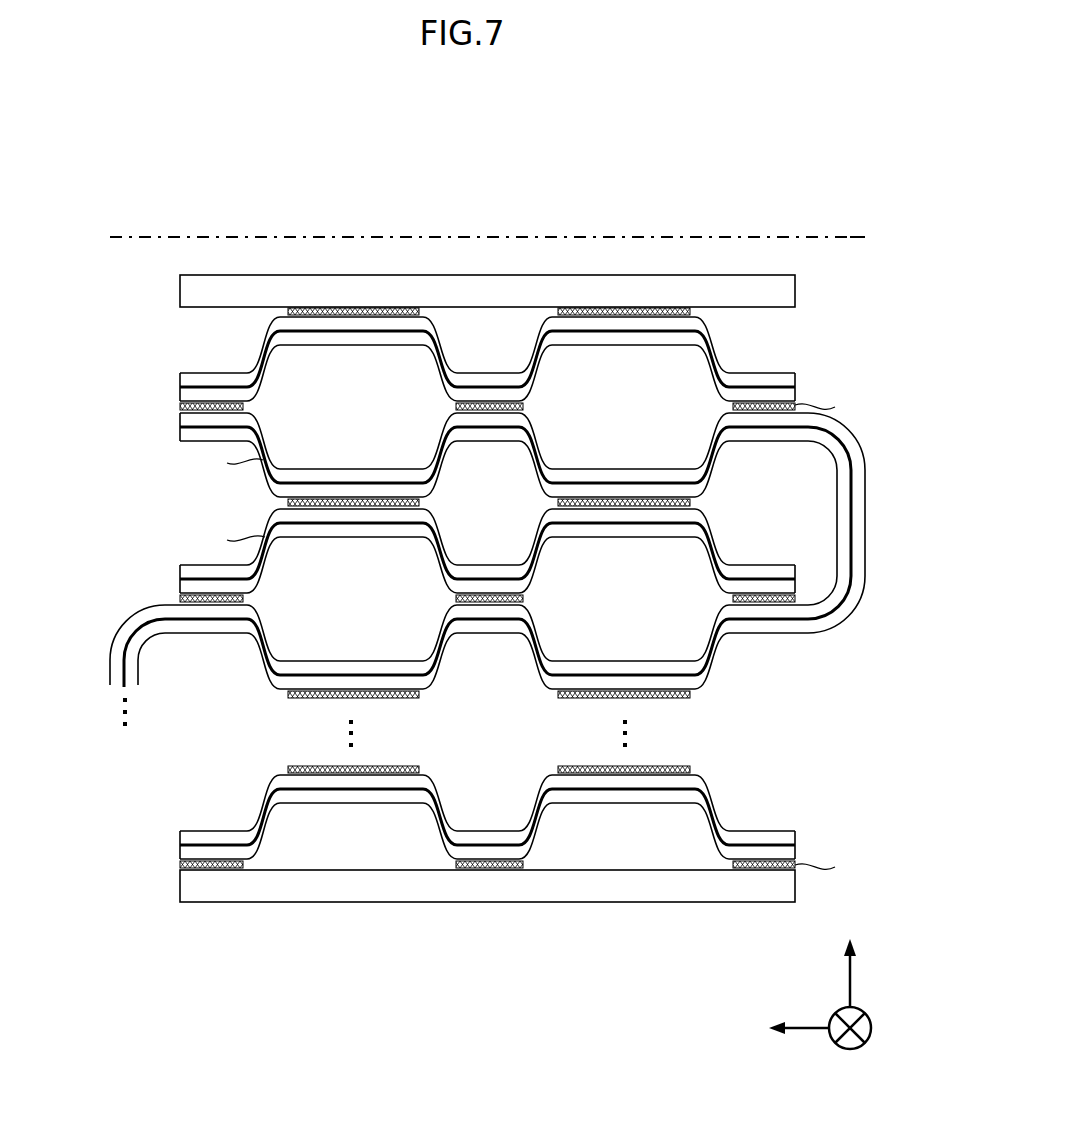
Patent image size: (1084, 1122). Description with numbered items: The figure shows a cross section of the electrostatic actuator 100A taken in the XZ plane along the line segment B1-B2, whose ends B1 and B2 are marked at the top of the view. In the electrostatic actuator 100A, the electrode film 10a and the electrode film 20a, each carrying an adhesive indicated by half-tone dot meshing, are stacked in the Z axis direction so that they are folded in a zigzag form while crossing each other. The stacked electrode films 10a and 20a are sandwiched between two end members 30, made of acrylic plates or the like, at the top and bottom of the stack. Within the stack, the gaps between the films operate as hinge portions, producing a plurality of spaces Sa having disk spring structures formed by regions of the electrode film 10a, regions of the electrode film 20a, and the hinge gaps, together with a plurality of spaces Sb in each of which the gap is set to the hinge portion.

The electrostatic actuator 100A is at (237, 143).
The end member 30 is at (157, 895).
The electrode film 10a is at (795, 828).
The electrode film 20a is at (787, 630).
The space Sa is at (322, 607).
The space Sb is at (492, 525).
The line segment end B1 is at (465, 239).
The line segment end B2 is at (888, 239).